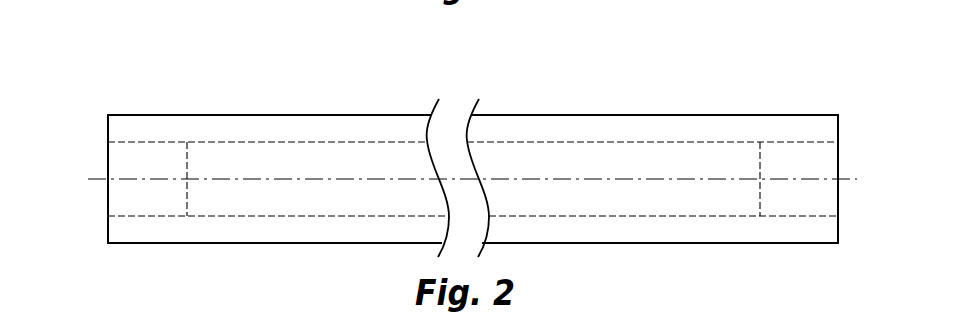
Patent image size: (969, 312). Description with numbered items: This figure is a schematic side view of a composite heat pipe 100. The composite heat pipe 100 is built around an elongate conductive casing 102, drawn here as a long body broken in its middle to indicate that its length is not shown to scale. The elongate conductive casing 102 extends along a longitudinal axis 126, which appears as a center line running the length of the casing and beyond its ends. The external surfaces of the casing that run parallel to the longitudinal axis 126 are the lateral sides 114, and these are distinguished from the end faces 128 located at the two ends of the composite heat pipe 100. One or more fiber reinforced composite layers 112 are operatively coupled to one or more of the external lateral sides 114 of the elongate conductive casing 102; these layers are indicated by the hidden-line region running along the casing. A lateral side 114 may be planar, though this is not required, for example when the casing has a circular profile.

The composite heat pipe 100 is at (762, 48).
The elongate conductive casing 102 is at (644, 112).
The fiber reinforced composite layer 112 is at (252, 170).
The lateral side 114 is at (298, 128).
The longitudinal axis 126 is at (847, 180).
The end face 128 is at (108, 200).